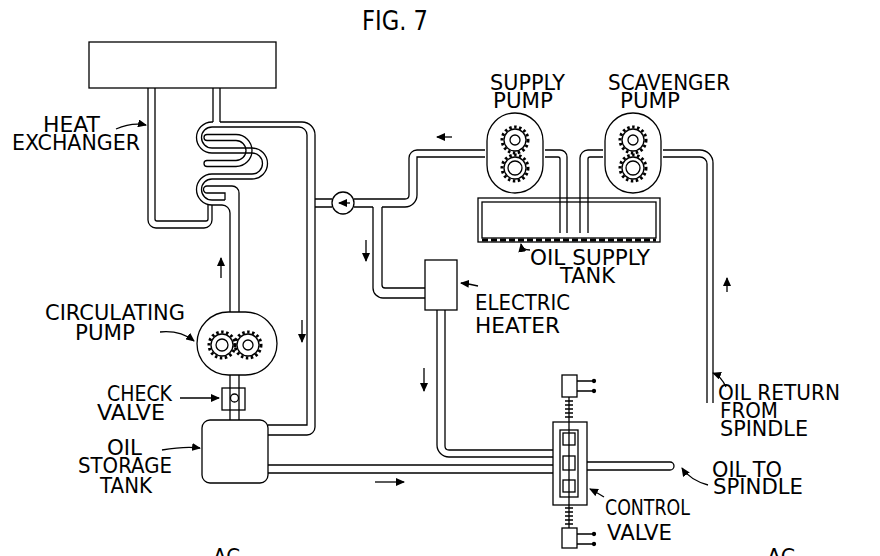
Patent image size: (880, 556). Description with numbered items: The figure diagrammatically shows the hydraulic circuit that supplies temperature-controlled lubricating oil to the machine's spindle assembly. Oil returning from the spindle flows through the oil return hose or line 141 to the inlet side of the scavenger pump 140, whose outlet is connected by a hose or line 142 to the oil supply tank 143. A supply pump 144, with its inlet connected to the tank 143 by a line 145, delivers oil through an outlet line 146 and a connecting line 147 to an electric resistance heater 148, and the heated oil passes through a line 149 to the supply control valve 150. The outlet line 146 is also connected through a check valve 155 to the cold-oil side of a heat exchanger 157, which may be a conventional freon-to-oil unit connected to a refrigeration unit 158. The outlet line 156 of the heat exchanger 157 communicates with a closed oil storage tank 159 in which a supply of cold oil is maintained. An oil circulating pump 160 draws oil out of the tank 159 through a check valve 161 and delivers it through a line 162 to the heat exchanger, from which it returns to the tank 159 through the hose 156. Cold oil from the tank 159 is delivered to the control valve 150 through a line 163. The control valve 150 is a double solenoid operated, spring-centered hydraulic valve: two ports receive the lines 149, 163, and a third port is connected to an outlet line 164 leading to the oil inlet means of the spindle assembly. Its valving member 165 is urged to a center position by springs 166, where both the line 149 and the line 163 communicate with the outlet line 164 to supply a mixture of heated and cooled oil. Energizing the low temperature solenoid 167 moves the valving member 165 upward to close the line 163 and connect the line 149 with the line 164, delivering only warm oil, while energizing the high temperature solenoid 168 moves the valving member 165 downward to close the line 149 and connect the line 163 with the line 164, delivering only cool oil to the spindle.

The scavenger pump 140 is at (655, 133).
The oil return hose or line 141 is at (715, 222).
The hose or line 142 is at (587, 150).
The oil supply tank 143 is at (502, 241).
The supply pump 144 is at (487, 131).
The line 145 is at (563, 151).
The outlet line 146 is at (420, 151).
The connecting line 147 is at (383, 232).
The electric resistance heater 148 is at (457, 264).
The line 149 is at (445, 355).
The supply control valve 150 is at (587, 431).
The check valve 155 is at (357, 190).
The outlet line 156 is at (308, 122).
The heat exchanger 157 is at (254, 182).
The refrigeration unit 158 is at (207, 42).
The oil storage tank 159 is at (248, 484).
The oil circulating pump 160 is at (246, 320).
The check valve 161 is at (247, 397).
The line 162 is at (240, 228).
The line 163 is at (480, 476).
The outlet line 164 is at (638, 465).
The valving member 165 is at (562, 444).
The springs 166 is at (566, 402).
The low temperature solenoid 167 is at (577, 364).
The high temperature solenoid 168 is at (560, 540).